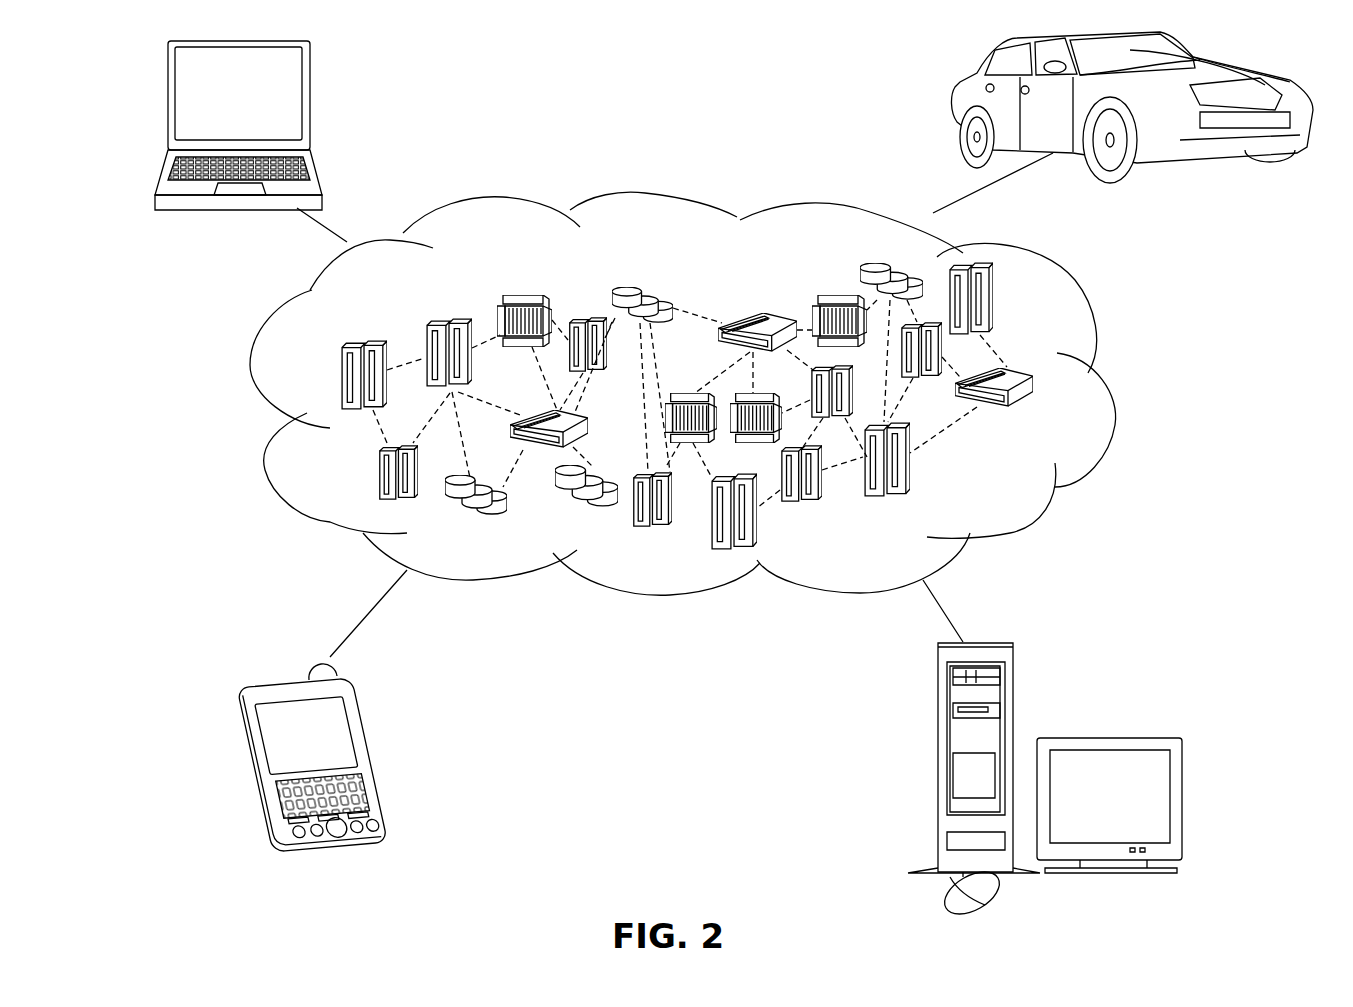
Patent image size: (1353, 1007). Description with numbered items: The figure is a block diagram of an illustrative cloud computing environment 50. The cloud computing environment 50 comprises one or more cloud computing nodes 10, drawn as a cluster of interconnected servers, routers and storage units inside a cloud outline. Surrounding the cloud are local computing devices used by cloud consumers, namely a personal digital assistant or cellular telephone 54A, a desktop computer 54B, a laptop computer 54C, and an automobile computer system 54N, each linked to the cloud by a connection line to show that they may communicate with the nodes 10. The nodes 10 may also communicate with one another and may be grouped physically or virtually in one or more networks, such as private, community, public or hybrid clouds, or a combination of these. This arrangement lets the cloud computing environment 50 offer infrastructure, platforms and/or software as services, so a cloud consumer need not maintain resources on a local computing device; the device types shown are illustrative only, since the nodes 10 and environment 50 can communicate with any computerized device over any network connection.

The cloud computing nodes 10 is at (1016, 492).
The cloud computing environment 50 is at (1105, 388).
The personal digital assistant (PDA) or cellular telephone 54A is at (363, 718).
The desktop computer 54B is at (937, 703).
The laptop computer 54C is at (312, 82).
The automobile computer system 54N is at (953, 95).